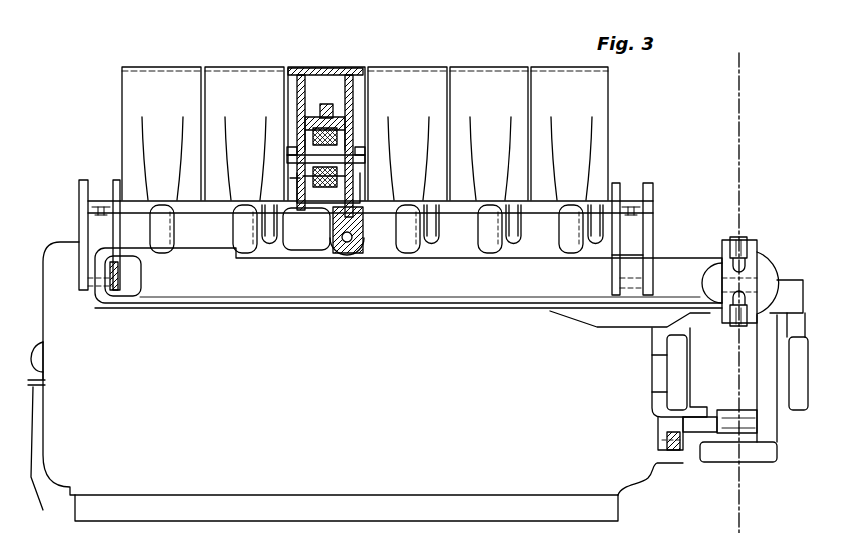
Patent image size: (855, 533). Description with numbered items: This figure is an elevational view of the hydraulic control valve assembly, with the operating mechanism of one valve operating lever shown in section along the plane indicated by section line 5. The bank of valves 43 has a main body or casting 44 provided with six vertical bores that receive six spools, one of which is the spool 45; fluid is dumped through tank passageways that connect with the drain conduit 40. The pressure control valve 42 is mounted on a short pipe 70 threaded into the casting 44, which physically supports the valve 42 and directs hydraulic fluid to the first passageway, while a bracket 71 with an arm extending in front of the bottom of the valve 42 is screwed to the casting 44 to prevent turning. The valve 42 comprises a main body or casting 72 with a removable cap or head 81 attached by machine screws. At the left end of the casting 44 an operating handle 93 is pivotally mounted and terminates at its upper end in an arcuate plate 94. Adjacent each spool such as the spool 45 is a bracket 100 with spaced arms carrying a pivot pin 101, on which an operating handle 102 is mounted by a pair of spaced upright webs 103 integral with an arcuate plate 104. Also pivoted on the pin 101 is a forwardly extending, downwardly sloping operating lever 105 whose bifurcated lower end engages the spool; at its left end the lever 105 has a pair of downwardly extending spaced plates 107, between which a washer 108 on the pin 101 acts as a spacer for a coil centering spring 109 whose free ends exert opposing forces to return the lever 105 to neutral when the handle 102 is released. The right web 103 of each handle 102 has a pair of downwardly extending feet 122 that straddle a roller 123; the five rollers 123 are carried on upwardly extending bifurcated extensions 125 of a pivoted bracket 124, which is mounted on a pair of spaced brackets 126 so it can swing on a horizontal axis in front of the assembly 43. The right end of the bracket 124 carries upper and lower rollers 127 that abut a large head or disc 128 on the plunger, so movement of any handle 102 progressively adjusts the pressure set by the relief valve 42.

The section line 5 is at (742, 55).
The drain conduit 40 is at (40, 437).
The pressure control valve 42 is at (769, 238).
The bank of valves 43 is at (619, 134).
The main body 44 is at (382, 381).
The spool 45 is at (346, 514).
The pipe 70 is at (660, 370).
The bracket 71 is at (695, 430).
The main body 72 is at (697, 372).
The removable cap 81 is at (789, 288).
The operating handle 93 is at (158, 155).
The arcuate plate 94 is at (150, 80).
The bracket 100 is at (364, 170).
The pivot pin 101 is at (358, 160).
The operating handle 102 is at (240, 244).
The upright webs 103 is at (360, 78).
The arcuate plate 104 is at (327, 67).
The operating lever 105 is at (330, 109).
The plates 107 is at (354, 138).
The washer 108 is at (302, 178).
The centering spring 109 is at (338, 132).
The feet 122 is at (346, 207).
The roller 123 is at (357, 218).
The pivoted bracket 124 is at (408, 275).
The bifurcated extensions 125 is at (354, 257).
The spaced brackets 126 is at (100, 232).
The rollers 127 is at (742, 247).
The disc 128 is at (766, 266).